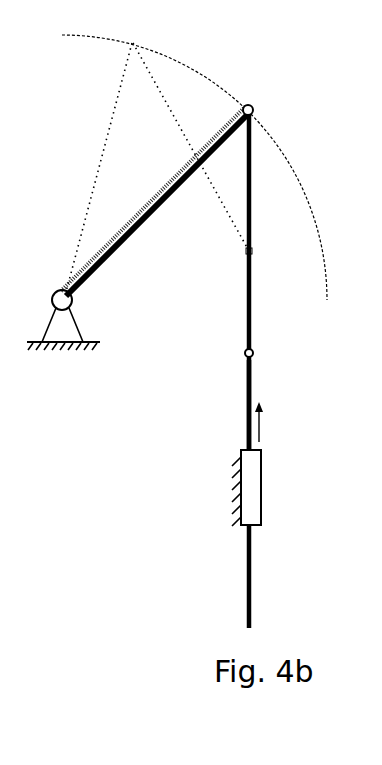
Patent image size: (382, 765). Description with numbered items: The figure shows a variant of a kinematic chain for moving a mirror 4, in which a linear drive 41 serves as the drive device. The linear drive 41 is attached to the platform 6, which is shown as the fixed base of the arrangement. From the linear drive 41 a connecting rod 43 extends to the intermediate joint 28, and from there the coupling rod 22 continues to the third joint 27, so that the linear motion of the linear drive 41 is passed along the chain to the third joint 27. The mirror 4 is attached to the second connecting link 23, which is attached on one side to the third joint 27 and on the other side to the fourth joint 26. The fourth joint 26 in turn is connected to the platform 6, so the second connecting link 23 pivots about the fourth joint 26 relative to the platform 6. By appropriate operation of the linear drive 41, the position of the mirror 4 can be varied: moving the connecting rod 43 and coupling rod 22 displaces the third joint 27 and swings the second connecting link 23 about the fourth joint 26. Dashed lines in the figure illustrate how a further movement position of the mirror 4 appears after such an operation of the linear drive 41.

The mirror 4 is at (130, 217).
The platform 6 is at (68, 350).
The coupling rod 22 is at (252, 302).
The second connecting link 23 is at (153, 213).
The fourth joint 26 is at (70, 298).
The third joint 27 is at (253, 106).
The passive intermediate joint 28 is at (253, 353).
The linear drive 41 is at (250, 500).
The connecting rod 43 is at (252, 385).